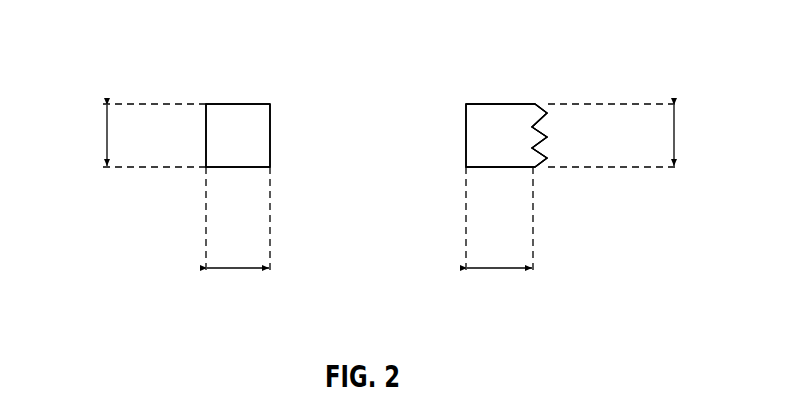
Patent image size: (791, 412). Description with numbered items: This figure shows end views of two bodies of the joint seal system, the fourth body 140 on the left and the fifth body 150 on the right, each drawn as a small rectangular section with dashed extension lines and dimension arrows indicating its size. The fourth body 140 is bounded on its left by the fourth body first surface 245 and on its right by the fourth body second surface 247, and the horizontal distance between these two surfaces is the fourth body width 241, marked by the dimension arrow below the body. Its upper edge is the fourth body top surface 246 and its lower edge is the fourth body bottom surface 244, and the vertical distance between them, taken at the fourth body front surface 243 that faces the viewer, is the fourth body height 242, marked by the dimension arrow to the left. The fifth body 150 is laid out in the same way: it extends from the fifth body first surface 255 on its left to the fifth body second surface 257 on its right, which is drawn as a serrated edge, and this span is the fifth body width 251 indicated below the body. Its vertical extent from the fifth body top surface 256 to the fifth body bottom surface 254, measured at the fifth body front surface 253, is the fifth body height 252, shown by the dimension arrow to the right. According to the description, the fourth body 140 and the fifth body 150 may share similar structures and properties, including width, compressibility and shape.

The fourth body 140 is at (235, 137).
The fifth body 150 is at (508, 137).
The fourth body width 241 is at (247, 273).
The fourth body height 242 is at (107, 137).
The fourth body front surface 243 is at (257, 149).
The fourth body bottom surface 244 is at (255, 167).
The fourth body first surface 245 is at (206, 145).
The fourth body top surface 246 is at (238, 104).
The fourth body second surface 247 is at (270, 137).
The fifth body width 251 is at (508, 273).
The fifth body height 252 is at (674, 137).
The fifth body front surface 253 is at (527, 149).
The fifth body bottom surface 254 is at (517, 167).
The fifth body first surface 255 is at (466, 137).
The fifth body top surface 256 is at (500, 104).
The fifth body second surface 257 is at (547, 137).